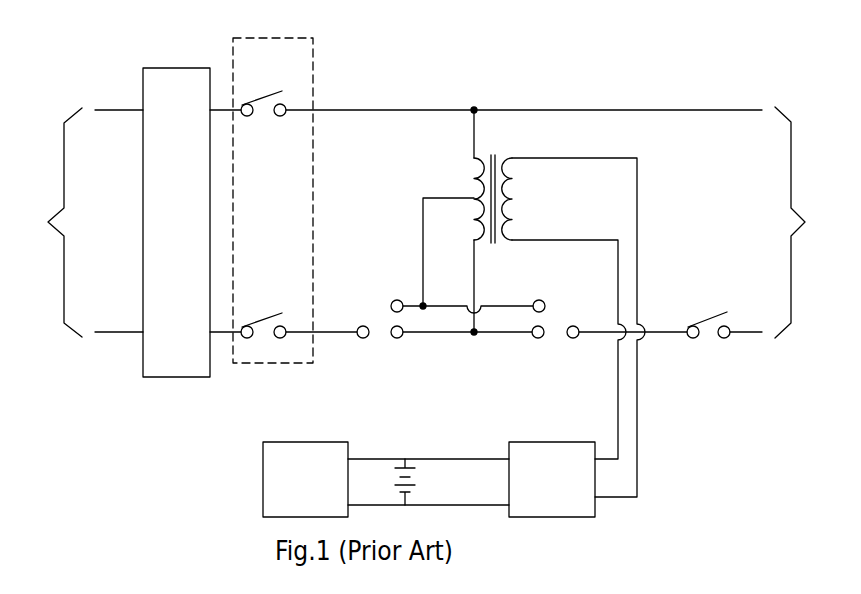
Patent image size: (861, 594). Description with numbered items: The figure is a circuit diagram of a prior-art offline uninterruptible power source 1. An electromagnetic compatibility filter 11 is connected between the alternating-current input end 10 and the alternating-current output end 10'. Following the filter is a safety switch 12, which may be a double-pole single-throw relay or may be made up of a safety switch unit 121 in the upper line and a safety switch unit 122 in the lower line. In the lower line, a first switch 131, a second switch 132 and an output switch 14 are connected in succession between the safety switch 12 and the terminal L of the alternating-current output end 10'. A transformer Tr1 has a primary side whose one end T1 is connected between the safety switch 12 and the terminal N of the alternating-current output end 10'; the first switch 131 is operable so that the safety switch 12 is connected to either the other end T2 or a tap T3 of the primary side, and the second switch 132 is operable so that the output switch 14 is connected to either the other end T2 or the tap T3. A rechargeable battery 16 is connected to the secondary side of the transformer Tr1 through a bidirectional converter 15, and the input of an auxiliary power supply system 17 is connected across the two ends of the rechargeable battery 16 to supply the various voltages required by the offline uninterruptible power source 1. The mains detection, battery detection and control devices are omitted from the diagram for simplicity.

The offline uninterruptible power source 1 is at (735, 503).
The alternating-current input end 10 is at (52, 222).
The alternating-current output end 10' is at (804, 222).
The electromagnetic compatibility (EMC) filter 11 is at (176, 68).
The safety switch 12 is at (277, 38).
The safety switch unit 121 is at (257, 91).
The safety switch unit 122 is at (257, 311).
The first switch 131 is at (375, 307).
The second switch 132 is at (559, 310).
The output switch 14 is at (707, 311).
The bidirectional converter 15 is at (552, 442).
The rechargeable battery 16 is at (419, 491).
The auxiliary power supply system 17 is at (305, 442).
The transformer Tr1 is at (493, 155).
The one end of primary side T1 is at (474, 137).
The other end of primary side T2 is at (474, 248).
The tap of primary side T3 is at (462, 197).
The terminal N is at (744, 110).
The terminal L is at (744, 331).